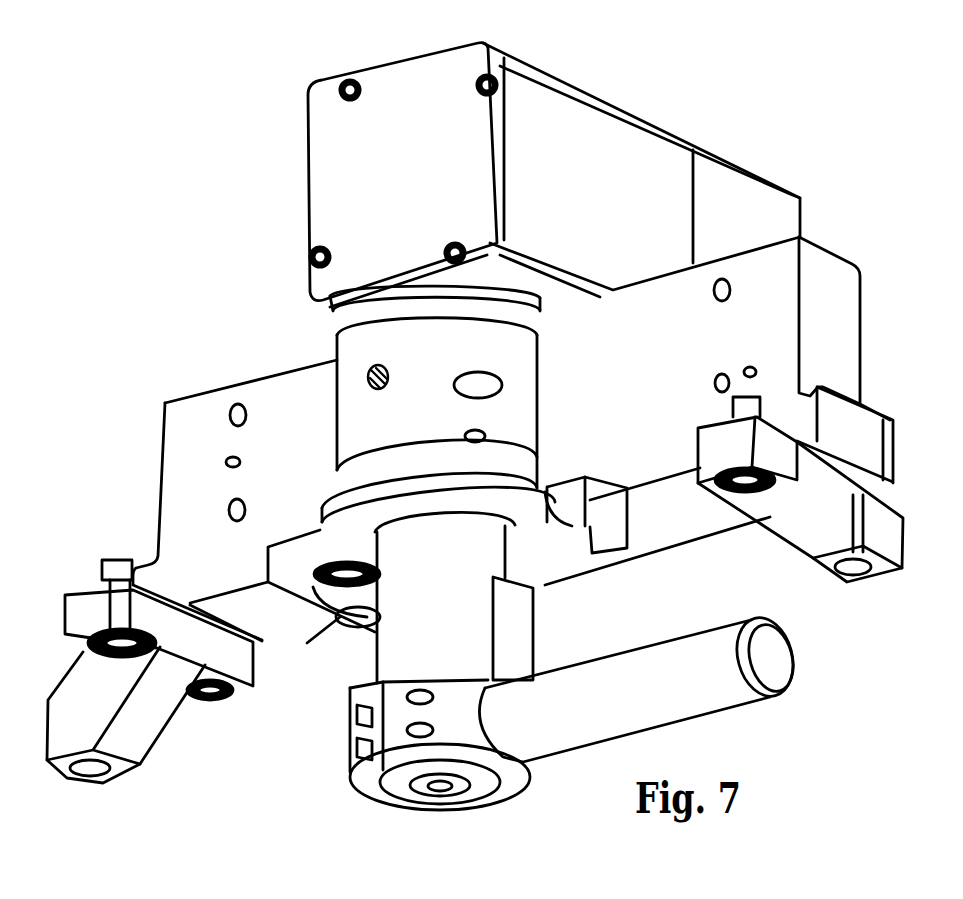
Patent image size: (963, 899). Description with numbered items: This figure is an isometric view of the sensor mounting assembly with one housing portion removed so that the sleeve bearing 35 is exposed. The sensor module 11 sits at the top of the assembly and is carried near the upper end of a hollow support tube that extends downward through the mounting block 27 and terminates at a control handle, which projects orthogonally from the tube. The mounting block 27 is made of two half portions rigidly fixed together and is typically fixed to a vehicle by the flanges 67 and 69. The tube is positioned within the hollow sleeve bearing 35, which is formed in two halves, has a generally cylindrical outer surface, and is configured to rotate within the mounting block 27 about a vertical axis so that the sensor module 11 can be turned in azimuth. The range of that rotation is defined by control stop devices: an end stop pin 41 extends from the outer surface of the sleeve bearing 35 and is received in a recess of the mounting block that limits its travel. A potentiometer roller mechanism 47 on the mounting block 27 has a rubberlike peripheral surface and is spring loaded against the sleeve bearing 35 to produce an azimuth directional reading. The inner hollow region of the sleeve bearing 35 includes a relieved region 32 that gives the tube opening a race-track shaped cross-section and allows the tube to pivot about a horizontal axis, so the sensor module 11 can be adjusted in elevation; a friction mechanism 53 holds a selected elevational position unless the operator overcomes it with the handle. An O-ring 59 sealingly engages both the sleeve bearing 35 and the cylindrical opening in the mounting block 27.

The sensor module 11 is at (648, 165).
The mounting block 27 is at (190, 430).
The relieved region 32 is at (550, 570).
The sleeve bearing 35 is at (360, 348).
The end stop pin 41 is at (622, 553).
The potentiometer roller mechanism 47 is at (337, 605).
The friction mechanism 53 is at (368, 372).
The O-ring 59 is at (332, 318).
The flange 67 is at (807, 528).
The flange 69 is at (162, 710).